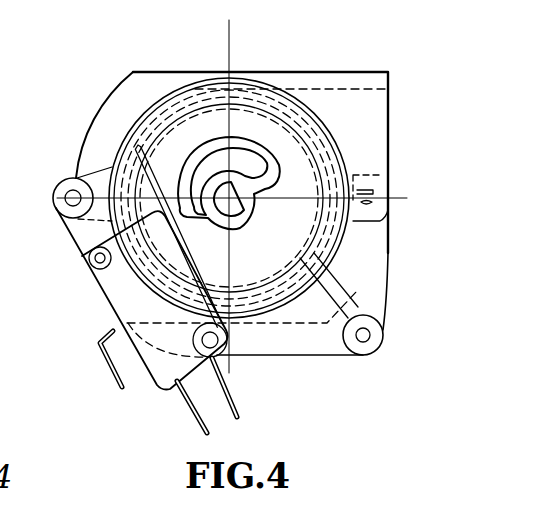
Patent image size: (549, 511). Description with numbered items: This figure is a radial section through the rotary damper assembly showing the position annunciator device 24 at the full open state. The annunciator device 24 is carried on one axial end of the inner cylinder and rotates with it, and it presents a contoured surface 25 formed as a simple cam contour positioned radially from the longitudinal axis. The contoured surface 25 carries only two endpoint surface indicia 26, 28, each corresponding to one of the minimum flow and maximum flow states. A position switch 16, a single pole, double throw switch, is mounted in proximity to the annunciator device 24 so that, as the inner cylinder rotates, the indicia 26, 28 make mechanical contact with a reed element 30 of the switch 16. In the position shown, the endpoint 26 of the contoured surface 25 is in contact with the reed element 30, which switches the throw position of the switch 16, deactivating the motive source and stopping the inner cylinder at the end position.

The position switch 16 is at (128, 307).
The position annunciator device 24 is at (254, 214).
The contoured surface 25 is at (210, 142).
The endpoint surface indicia 26 is at (294, 306).
The endpoint surface indicia 28 is at (308, 147).
The reed element 30 is at (140, 150).